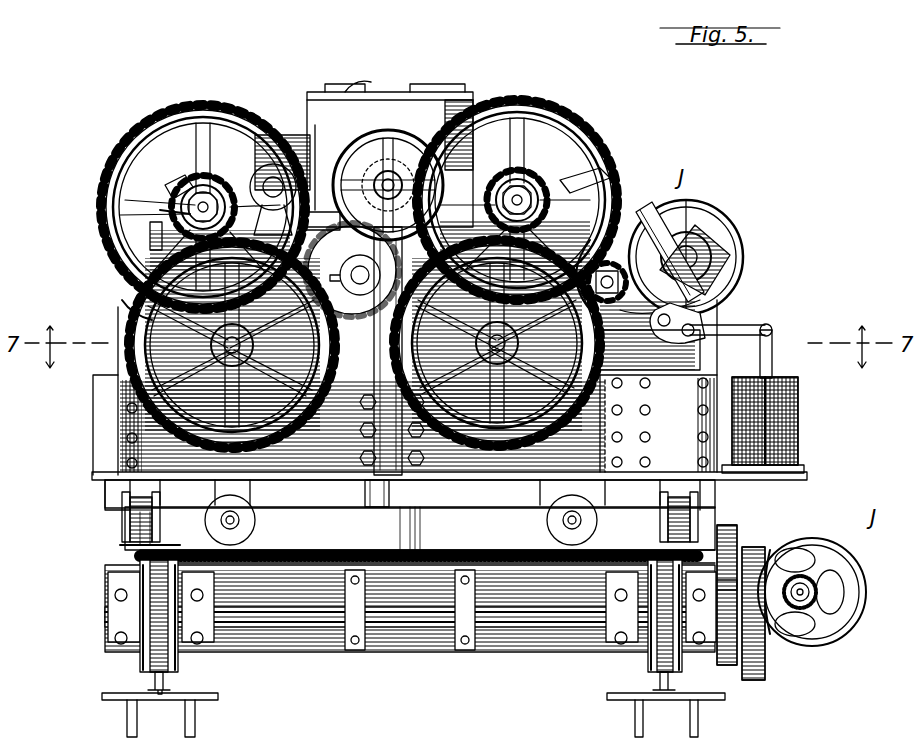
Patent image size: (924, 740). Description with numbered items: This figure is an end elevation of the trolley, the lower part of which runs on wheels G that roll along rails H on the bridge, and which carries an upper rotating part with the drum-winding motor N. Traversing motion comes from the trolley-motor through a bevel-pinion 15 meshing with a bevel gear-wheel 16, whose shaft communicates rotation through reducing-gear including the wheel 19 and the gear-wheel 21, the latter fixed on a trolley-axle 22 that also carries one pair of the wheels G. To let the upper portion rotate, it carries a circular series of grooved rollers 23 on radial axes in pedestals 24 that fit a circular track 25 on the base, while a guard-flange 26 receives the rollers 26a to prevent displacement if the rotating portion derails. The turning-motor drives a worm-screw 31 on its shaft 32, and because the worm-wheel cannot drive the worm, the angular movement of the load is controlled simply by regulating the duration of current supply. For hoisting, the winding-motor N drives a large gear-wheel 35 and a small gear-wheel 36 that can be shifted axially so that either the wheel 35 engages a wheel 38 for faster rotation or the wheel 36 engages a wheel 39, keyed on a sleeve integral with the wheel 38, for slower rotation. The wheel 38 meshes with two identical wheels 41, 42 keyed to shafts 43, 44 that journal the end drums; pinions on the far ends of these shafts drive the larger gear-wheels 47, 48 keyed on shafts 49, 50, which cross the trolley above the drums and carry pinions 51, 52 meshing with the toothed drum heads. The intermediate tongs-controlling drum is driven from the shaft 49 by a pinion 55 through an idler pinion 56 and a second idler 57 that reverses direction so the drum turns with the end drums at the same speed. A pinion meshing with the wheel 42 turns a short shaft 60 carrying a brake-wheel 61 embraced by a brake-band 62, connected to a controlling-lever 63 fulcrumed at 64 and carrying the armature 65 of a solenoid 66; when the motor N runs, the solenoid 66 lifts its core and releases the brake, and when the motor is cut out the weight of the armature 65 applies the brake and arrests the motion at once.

The bevel-pinion 15 is at (805, 585).
The bevel gear-wheel 16 is at (808, 590).
The reducing-gear wheel 19 is at (728, 518).
The reducing-gear wheel 21 is at (768, 678).
The trolley-axle 22 is at (417, 618).
The grooved roller 23 is at (125, 538).
The pedestal 24 is at (118, 508).
The circular track 25 is at (122, 553).
The guard-flange 26 is at (420, 535).
The roller 26a is at (388, 507).
The worm-screw 31 is at (680, 232).
The shaft 32 is at (688, 260).
The large gear-wheel 35 is at (410, 162).
The small gear-wheel 36 is at (410, 170).
The gear-wheel 38 is at (352, 270).
The gear-wheel 39 is at (305, 135).
The gear-wheel 41 is at (145, 300).
The gear-wheel 42 is at (594, 266).
The shaft 43 is at (145, 330).
The shaft 44 is at (610, 355).
The gear-wheel 47 is at (205, 106).
The gear-wheel 48 is at (545, 92).
The shaft 49 is at (194, 180).
The shaft 50 is at (582, 182).
The pinion 51 is at (215, 185).
The pinion 52 is at (530, 184).
The pinion 55 is at (166, 182).
The idler pinion 56 is at (160, 208).
The idler pinion 57 is at (152, 230).
The short shaft 60 is at (650, 222).
The brake-wheel 61 is at (727, 284).
The brake-band 62 is at (620, 226).
The controlling-lever 63 is at (695, 320).
The fulcrum 64 is at (768, 330).
The armature 65 is at (773, 372).
The solenoid 66 is at (802, 425).
The drum-winding motor N is at (386, 155).
The trolley wheel G is at (178, 668).
The rail H is at (165, 689).
The rail A is at (413, 715).